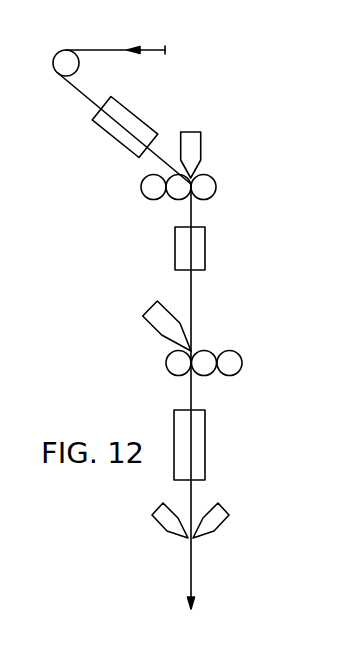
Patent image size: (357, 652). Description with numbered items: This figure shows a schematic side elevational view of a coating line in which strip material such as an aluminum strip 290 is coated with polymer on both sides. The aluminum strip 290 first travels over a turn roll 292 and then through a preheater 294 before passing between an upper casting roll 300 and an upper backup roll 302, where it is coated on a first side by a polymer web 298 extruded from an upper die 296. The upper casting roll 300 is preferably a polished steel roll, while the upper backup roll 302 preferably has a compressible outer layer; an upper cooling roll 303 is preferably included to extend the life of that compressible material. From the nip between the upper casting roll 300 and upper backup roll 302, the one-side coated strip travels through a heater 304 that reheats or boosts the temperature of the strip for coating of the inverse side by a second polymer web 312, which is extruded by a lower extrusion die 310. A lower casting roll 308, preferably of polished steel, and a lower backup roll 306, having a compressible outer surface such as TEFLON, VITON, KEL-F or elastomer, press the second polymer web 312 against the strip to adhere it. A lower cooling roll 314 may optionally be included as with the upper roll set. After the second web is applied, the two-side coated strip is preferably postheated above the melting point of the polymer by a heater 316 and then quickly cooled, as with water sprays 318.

The aluminum strip 290 is at (153, 50).
The turn roll 292 is at (79, 65).
The preheater 294 is at (112, 140).
The upper die 296 is at (198, 132).
The polymer web 298 is at (194, 177).
The upper casting roll 300 is at (216, 190).
The upper backup roll 302 is at (173, 200).
The upper cooling roll 303 is at (141, 186).
The heater 304 is at (206, 248).
The lower backup roll 306 is at (206, 351).
The lower casting roll 308 is at (168, 369).
The lower extrusion die 310 is at (152, 307).
The second polymer web 312 is at (183, 350).
The lower cooling roll 314 is at (243, 363).
The heater 316 is at (206, 460).
The water sprays 318 is at (180, 537).